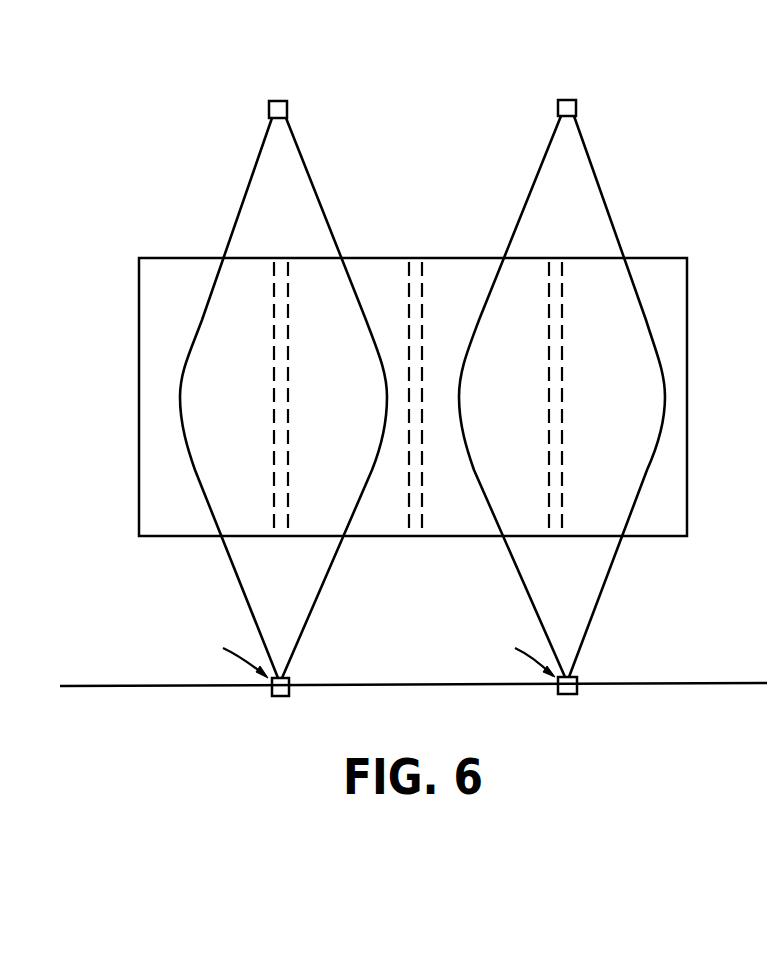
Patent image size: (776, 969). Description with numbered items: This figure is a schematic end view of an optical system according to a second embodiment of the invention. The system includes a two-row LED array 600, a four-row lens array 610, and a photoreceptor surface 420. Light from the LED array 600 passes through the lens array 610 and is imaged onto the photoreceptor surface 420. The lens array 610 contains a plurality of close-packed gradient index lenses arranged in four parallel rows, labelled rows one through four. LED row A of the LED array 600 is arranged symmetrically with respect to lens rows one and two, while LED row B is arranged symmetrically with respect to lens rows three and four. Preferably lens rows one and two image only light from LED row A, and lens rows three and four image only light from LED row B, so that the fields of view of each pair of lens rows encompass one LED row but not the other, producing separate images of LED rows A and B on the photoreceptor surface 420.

The two-row LED array 600 is at (532, 98).
The four-row lens array 610 is at (633, 254).
The photoreceptor surface 420 is at (672, 683).